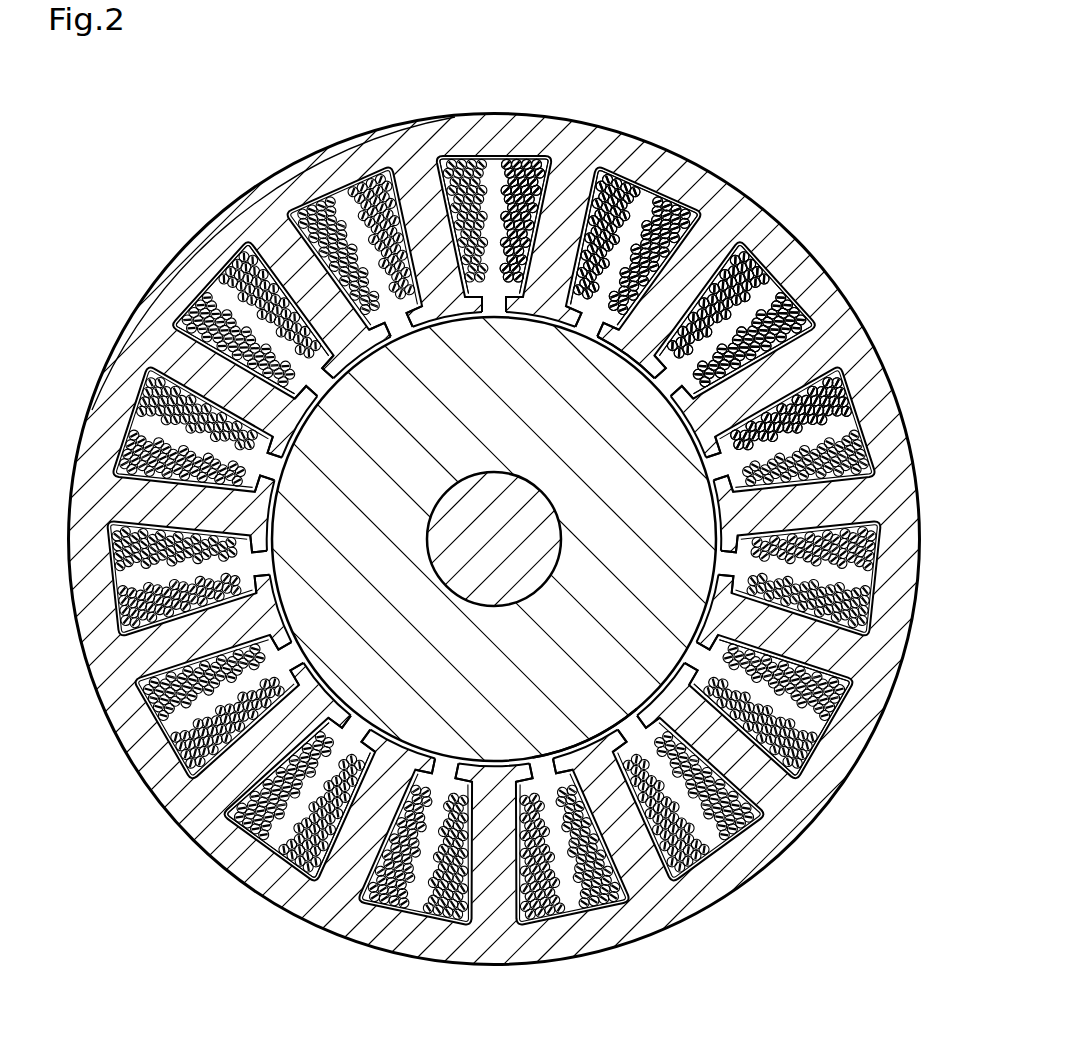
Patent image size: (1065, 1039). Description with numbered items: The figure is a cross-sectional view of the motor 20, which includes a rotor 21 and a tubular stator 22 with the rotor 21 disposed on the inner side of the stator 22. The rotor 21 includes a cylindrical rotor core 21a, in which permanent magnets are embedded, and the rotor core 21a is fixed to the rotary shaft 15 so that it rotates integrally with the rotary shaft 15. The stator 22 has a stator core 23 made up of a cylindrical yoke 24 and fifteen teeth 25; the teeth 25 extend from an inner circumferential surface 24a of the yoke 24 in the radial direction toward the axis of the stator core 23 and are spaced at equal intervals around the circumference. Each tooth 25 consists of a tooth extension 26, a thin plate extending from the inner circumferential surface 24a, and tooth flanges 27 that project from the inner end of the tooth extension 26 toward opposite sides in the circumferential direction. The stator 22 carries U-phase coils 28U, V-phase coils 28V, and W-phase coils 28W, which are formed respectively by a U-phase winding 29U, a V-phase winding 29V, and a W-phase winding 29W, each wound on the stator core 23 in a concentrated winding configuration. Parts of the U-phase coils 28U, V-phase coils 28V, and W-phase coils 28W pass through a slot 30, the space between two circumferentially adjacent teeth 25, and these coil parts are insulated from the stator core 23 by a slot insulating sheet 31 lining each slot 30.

The rotary shaft 15 is at (447, 586).
The motor 20 is at (734, 84).
The rotor 21 is at (497, 750).
The rotor core 21a is at (620, 805).
The stator 22 is at (230, 203).
The stator core 23 is at (173, 270).
The yoke 24 is at (473, 120).
The inner circumferential surface 24a is at (642, 187).
The teeth 25 is at (349, 330).
The tooth extension 26 is at (420, 220).
The tooth flanges 27 is at (290, 457).
The U-phase coils 28U is at (550, 158).
The V-phase coils 28V is at (706, 195).
The W-phase coils 28W is at (352, 212).
The U-phase winding 29U is at (592, 182).
The V-phase winding 29V is at (740, 245).
The W-phase winding 29W is at (808, 300).
The slot 30 is at (494, 195).
The slot insulating sheet 31 is at (350, 172).